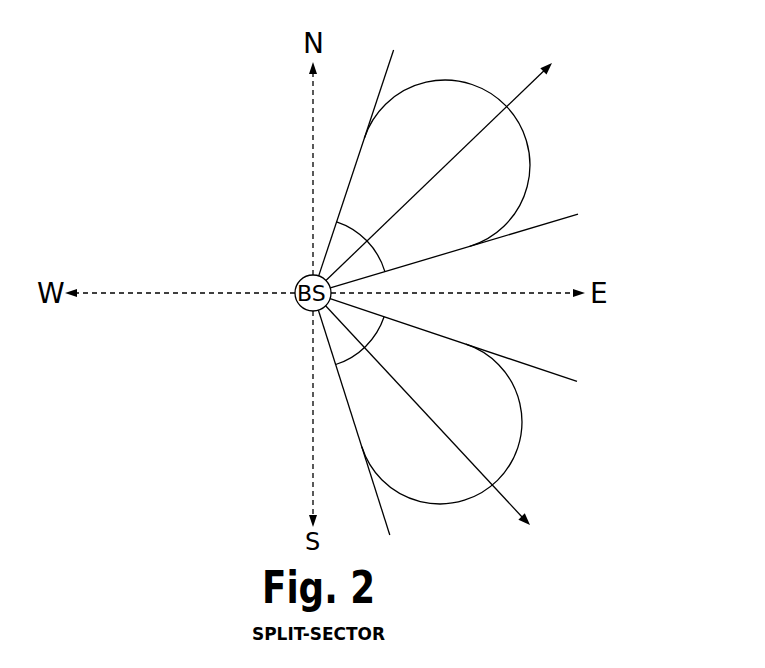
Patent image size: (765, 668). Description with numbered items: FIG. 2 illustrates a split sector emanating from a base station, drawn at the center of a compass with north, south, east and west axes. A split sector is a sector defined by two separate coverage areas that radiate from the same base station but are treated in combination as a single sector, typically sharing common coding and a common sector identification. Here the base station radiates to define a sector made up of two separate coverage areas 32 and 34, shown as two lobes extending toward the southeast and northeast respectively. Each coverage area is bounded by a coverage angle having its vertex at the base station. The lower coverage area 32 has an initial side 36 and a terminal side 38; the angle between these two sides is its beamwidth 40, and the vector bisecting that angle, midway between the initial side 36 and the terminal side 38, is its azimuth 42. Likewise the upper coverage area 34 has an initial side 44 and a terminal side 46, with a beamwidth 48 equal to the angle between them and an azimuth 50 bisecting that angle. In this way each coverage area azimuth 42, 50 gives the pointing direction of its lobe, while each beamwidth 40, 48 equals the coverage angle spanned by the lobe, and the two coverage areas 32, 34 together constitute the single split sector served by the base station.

The coverage area 32 is at (522, 445).
The coverage area 34 is at (530, 153).
The initial side 36 is at (390, 527).
The terminal side 38 is at (552, 372).
The beamwidth 40 is at (375, 333).
The azimuth 42 is at (502, 492).
The initial side 44 is at (543, 228).
The terminal side 46 is at (391, 65).
The beamwidth 48 is at (356, 230).
The azimuth 50 is at (523, 92).